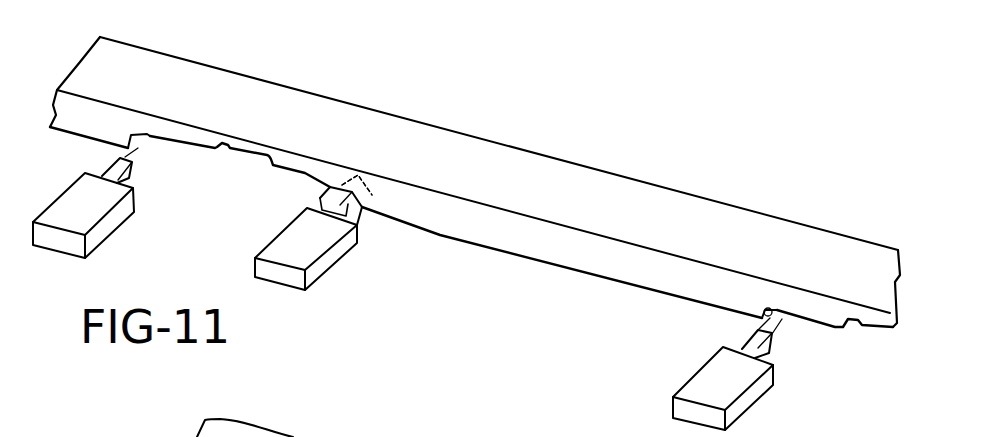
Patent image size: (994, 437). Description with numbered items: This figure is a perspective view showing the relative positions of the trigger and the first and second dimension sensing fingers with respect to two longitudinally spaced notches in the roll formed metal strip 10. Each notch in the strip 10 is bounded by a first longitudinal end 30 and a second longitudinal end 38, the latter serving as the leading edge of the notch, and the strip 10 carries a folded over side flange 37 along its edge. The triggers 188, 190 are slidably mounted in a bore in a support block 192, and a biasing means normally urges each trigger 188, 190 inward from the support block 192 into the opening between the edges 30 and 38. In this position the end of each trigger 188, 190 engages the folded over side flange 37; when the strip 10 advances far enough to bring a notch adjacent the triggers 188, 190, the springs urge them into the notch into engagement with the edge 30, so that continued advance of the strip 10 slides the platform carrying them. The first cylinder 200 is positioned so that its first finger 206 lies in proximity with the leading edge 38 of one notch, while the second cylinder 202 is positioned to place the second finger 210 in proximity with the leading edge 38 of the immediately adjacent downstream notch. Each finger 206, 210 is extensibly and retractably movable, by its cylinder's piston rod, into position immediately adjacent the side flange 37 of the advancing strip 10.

The metal strip 10 is at (407, 136).
The first longitudinal end 30 is at (356, 205).
The folded over side flange 37 is at (541, 248).
The second longitudinal end 38 is at (150, 141).
The trigger 188 is at (334, 102).
The trigger 190 is at (336, 197).
The support block 192 is at (323, 267).
The cylinder 200 is at (750, 400).
The second cylinder 202 is at (100, 235).
The first finger 206 is at (773, 340).
The second finger 210 is at (133, 171).